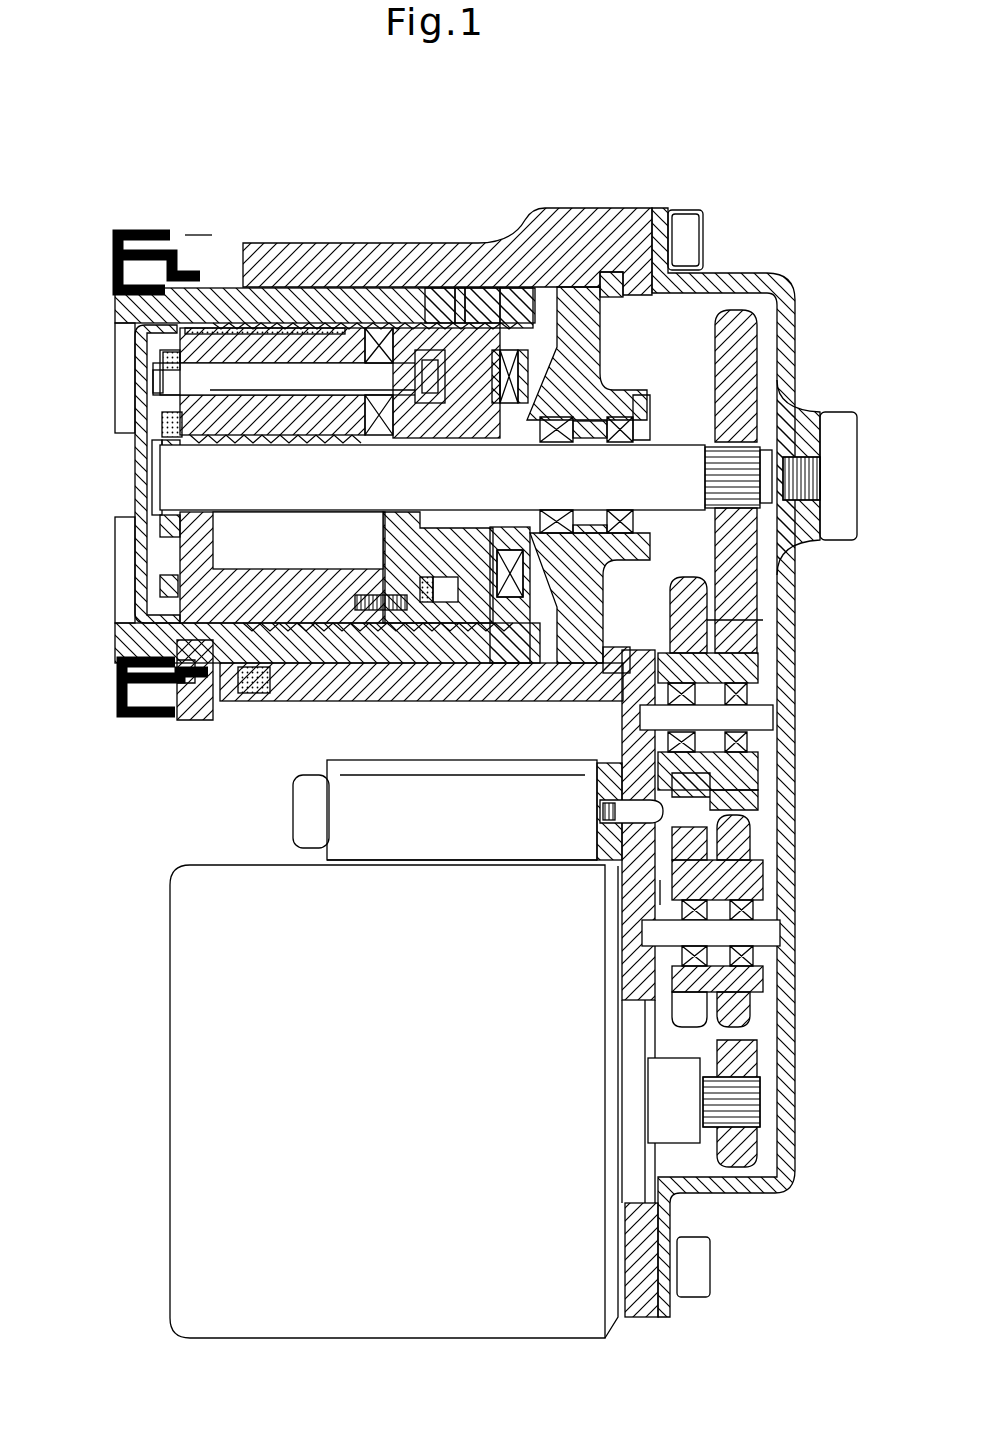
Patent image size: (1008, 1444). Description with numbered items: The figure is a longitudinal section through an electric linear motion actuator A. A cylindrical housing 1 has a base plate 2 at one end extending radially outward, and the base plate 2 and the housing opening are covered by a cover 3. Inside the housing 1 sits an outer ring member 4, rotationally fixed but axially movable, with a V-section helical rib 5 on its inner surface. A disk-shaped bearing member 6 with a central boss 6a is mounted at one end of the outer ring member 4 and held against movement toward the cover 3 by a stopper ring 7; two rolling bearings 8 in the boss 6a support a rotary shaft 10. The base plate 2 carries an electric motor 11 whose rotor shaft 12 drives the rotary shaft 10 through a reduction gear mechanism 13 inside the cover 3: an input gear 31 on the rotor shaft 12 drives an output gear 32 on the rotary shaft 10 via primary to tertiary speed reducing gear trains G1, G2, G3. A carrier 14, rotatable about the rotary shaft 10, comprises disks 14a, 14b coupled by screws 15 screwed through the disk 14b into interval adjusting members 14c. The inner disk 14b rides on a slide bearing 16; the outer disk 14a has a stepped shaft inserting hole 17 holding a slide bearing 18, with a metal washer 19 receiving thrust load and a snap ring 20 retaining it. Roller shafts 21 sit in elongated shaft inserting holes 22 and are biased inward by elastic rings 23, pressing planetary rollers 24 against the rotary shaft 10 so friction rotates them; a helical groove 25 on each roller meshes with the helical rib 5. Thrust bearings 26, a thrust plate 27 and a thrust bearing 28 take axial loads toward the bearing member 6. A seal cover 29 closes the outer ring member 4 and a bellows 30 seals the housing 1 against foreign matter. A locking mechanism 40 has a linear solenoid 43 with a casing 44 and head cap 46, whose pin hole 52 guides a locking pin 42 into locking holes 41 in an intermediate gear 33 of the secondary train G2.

The housing 1 is at (403, 260).
The base plate 2 is at (636, 1266).
The cover 3 is at (763, 285).
The outer ring member 4 is at (432, 300).
The helical rib 5 is at (470, 325).
The bearing member 6 is at (608, 272).
The boss 6a is at (642, 402).
The stopper ring 7 is at (620, 288).
The rolling bearings 8 is at (632, 440).
The rotary shaft 10 is at (170, 477).
The electric motor 11 is at (188, 872).
The rotor shaft 12 is at (665, 1098).
The reduction gear mechanism 13 is at (765, 775).
The carrier 14 is at (176, 553).
The disk 14a is at (165, 583).
The disk 14b is at (410, 600).
The interval adjusting members 14c is at (250, 700).
The screws 15 is at (380, 632).
The slide bearing 16 is at (415, 447).
The shaft inserting hole 17 is at (160, 428).
The slide bearing 18 is at (208, 455).
The metal washer 19 is at (157, 442).
The snap ring 20 is at (160, 523).
The roller shafts 21 is at (290, 370).
The shaft inserting holes 22 is at (402, 250).
The elastic rings 23 is at (458, 328).
The planetary roller 24 is at (243, 250).
The helical groove 25 is at (282, 447).
The thrust bearings 26 is at (372, 447).
The thrust plate 27 is at (512, 345).
The thrust bearing 28 is at (527, 340).
The seal cover 29 is at (135, 392).
The bellows 30 is at (150, 230).
The input gear 31 is at (760, 1140).
The output gear 32 is at (750, 355).
The intermediate gear 33 is at (703, 610).
The locking mechanism 40 is at (500, 870).
The locking holes 41 is at (742, 828).
The locking pin 42 is at (605, 795).
The linear solenoid 43 is at (370, 864).
The casing 44 is at (435, 835).
The head cap 46 is at (760, 853).
The pin hole 52 is at (608, 823).
The electric linear motion actuator A is at (208, 232).
The primary speed reducing gear train G1 is at (757, 1037).
The secondary speed reducing gear train G2 is at (660, 893).
The tertiary speed reducing gear train G3 is at (768, 630).